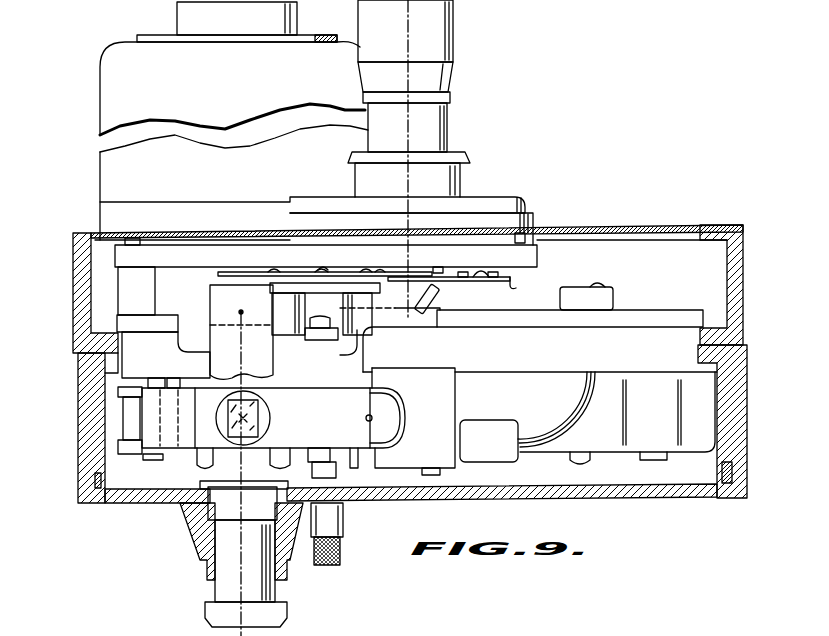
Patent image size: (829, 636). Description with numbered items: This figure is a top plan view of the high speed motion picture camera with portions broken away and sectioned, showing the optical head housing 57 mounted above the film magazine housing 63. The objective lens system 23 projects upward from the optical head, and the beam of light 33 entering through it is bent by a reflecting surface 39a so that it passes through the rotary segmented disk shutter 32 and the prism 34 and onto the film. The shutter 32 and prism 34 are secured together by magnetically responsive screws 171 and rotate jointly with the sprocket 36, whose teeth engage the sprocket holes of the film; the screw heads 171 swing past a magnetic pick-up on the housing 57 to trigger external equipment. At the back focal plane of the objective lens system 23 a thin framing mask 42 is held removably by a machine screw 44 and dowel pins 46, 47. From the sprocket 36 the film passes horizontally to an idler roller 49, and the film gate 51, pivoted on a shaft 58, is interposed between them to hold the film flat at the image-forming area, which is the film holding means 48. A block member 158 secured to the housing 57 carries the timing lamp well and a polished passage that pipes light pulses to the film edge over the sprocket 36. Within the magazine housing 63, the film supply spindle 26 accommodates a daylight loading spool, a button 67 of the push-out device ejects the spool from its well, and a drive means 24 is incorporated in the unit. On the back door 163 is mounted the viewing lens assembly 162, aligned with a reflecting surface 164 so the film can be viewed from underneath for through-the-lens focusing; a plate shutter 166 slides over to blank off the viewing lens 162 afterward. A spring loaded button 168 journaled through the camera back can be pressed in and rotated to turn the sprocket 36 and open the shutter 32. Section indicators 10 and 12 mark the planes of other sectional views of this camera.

The objective lens system 23 is at (457, 32).
The drive means 24 is at (97, 105).
The machine screw 44 is at (481, 265).
The dowel pin 46 is at (463, 271).
The dowel pin 47 is at (491, 270).
The framing mask 42 is at (440, 270).
The magnetically responsive screws 171 is at (281, 270).
The rotary segmented disk shutter 32 is at (244, 272).
The section line 10 is at (205, 303).
The optical head housing 57 is at (743, 272).
The beam of light 33 is at (393, 310).
The reflecting surface 39a is at (428, 314).
The prism 34 is at (291, 326).
The section line 12 is at (95, 420).
The idler roller 49 is at (125, 437).
The reflecting surface 164 is at (228, 412).
The film holding means 48 is at (273, 423).
The block member 158 is at (445, 460).
The film magazine housing 63 is at (748, 432).
The shaft 58 is at (157, 458).
The film gate 51 is at (186, 457).
The plate shutter 166 is at (220, 490).
The viewing lens assembly 162 is at (215, 588).
The spring loaded button 168 is at (343, 556).
The back door 163 is at (375, 503).
The sprocket 36 is at (338, 458).
The film supply spindle 26 is at (585, 465).
The button 67 is at (660, 462).